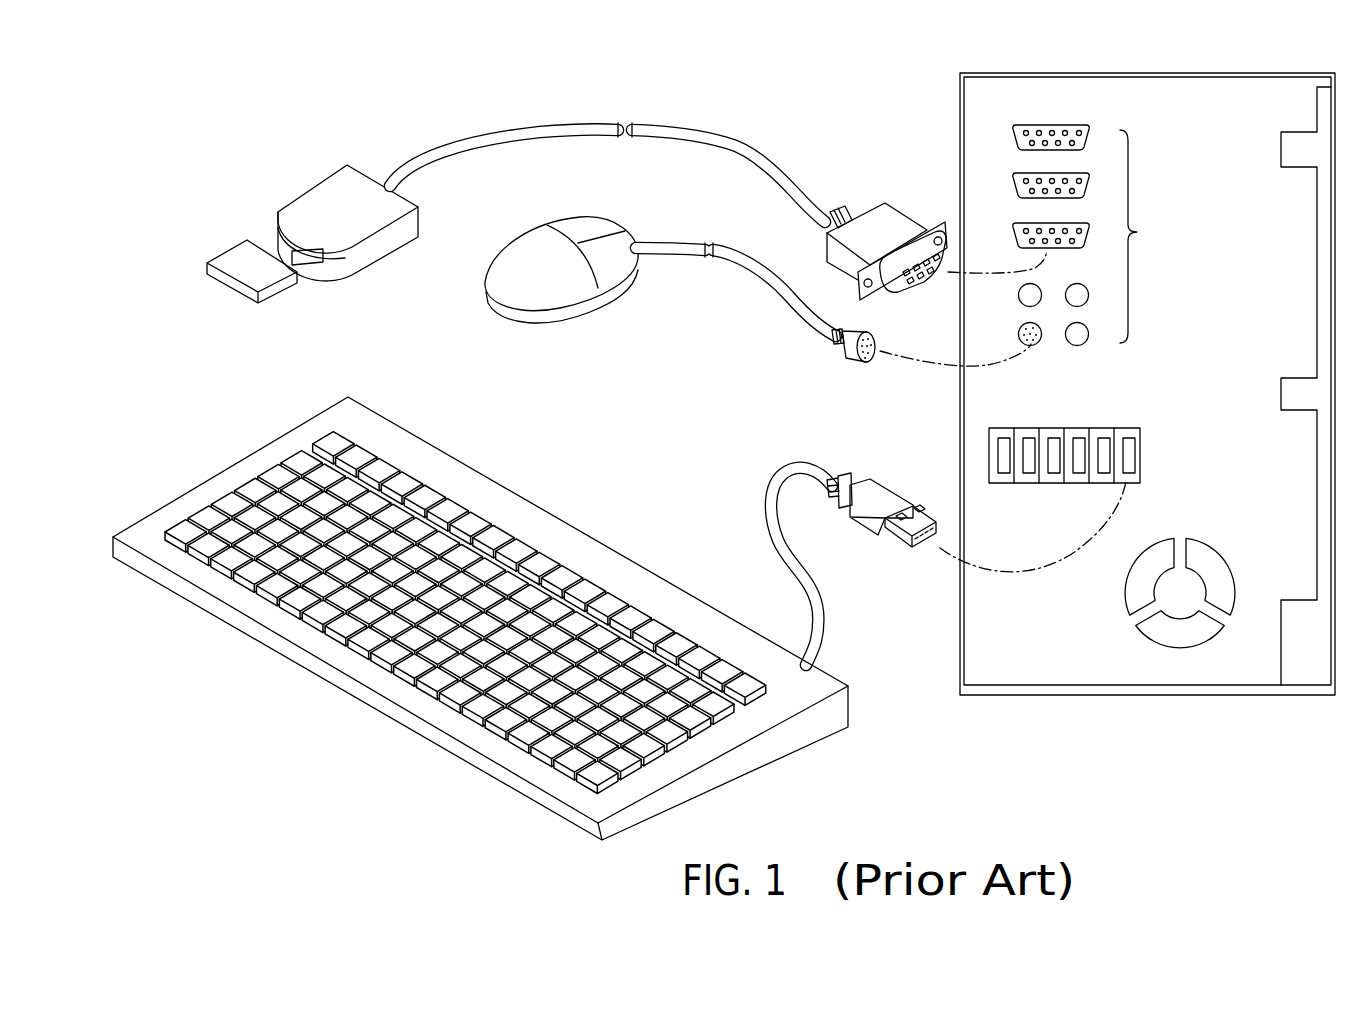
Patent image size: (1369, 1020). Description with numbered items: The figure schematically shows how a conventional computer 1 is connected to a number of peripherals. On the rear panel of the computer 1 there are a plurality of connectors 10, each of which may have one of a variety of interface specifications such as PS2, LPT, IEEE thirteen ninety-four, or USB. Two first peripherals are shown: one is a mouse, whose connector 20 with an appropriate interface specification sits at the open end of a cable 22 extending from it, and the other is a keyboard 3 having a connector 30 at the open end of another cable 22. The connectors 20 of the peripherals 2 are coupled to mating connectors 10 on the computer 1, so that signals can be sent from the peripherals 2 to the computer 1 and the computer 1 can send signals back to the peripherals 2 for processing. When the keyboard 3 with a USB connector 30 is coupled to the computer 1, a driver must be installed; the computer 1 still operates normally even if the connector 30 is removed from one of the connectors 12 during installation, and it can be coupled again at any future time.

The computer 1 is at (1118, 672).
The peripherals 2 is at (512, 285).
The keyboard 3 is at (343, 665).
The connectors 10 is at (1090, 235).
The connectors 12 is at (1125, 481).
The connector 20 is at (895, 222).
The cable 22 is at (660, 128).
The connector 30 is at (893, 500).